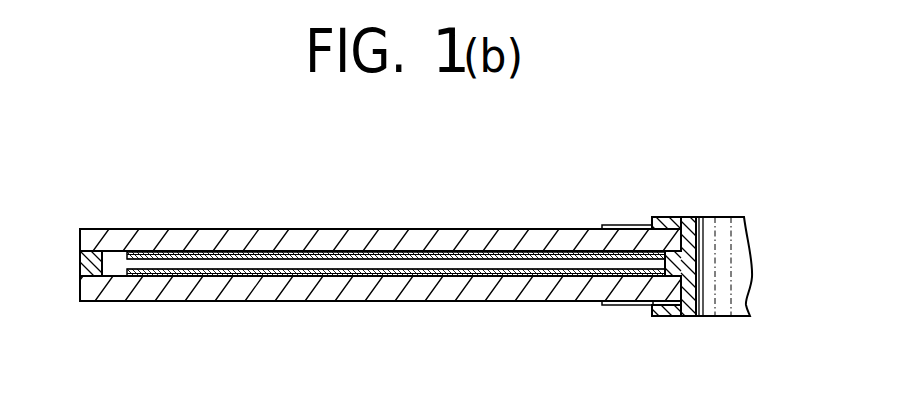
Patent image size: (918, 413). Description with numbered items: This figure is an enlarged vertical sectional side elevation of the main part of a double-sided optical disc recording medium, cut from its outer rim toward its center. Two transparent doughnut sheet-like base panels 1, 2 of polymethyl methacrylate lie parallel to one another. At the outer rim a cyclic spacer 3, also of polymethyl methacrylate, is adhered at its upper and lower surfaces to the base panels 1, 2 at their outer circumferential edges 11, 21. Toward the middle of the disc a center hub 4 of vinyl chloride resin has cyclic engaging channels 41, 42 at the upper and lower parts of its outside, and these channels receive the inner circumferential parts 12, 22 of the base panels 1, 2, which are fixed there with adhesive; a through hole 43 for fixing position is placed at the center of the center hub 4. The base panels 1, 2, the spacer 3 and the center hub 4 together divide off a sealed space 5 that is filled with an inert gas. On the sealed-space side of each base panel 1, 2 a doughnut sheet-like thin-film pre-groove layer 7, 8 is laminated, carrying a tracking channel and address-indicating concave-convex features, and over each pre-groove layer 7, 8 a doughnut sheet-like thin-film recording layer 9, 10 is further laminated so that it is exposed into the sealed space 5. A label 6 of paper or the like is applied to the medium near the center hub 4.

The base panel 1 is at (272, 228).
The base panel 2 is at (257, 297).
The cyclic spacer 3 is at (82, 264).
The center hub 4 is at (672, 217).
The sealed space 5 is at (113, 265).
The label 6 is at (606, 226).
The pre-groove layer 7 is at (353, 228).
The pre-groove layer 8 is at (387, 277).
The recording layer 9 is at (458, 271).
The recording layer 10 is at (430, 262).
The outer circumferential edge 11 is at (91, 236).
The inner circumferential part 12 is at (699, 218).
The outer circumferential edge 21 is at (90, 284).
The inner circumferential part 22 is at (697, 280).
The cyclic engaging channel 41 is at (681, 244).
The cyclic engaging channel 42 is at (680, 293).
The through hole 43 is at (739, 270).